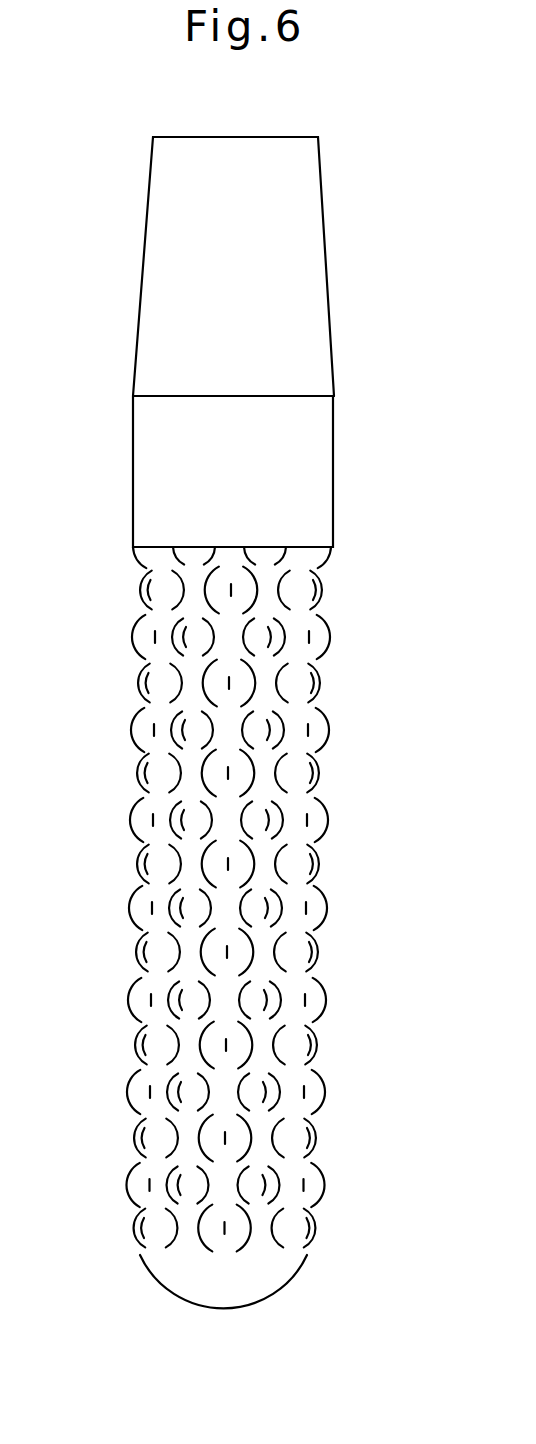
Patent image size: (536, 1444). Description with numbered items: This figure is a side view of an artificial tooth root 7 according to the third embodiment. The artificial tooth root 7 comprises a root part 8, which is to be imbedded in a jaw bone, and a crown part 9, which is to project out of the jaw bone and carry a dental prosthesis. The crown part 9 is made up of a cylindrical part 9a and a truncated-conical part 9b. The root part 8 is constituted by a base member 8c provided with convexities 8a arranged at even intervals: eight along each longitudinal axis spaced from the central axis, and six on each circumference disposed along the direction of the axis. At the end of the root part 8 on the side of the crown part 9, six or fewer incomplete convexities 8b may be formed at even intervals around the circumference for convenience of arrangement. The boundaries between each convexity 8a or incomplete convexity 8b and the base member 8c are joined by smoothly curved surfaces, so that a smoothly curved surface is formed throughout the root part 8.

The artificial tooth root 7 is at (358, 553).
The root part 8 is at (343, 812).
The convexities 8a is at (140, 1215).
The incomplete convexities 8b is at (137, 560).
The base member 8c is at (303, 1258).
The crown part 9 is at (346, 392).
The cylindrical part 9a is at (142, 448).
The truncated-conical part 9b is at (155, 256).